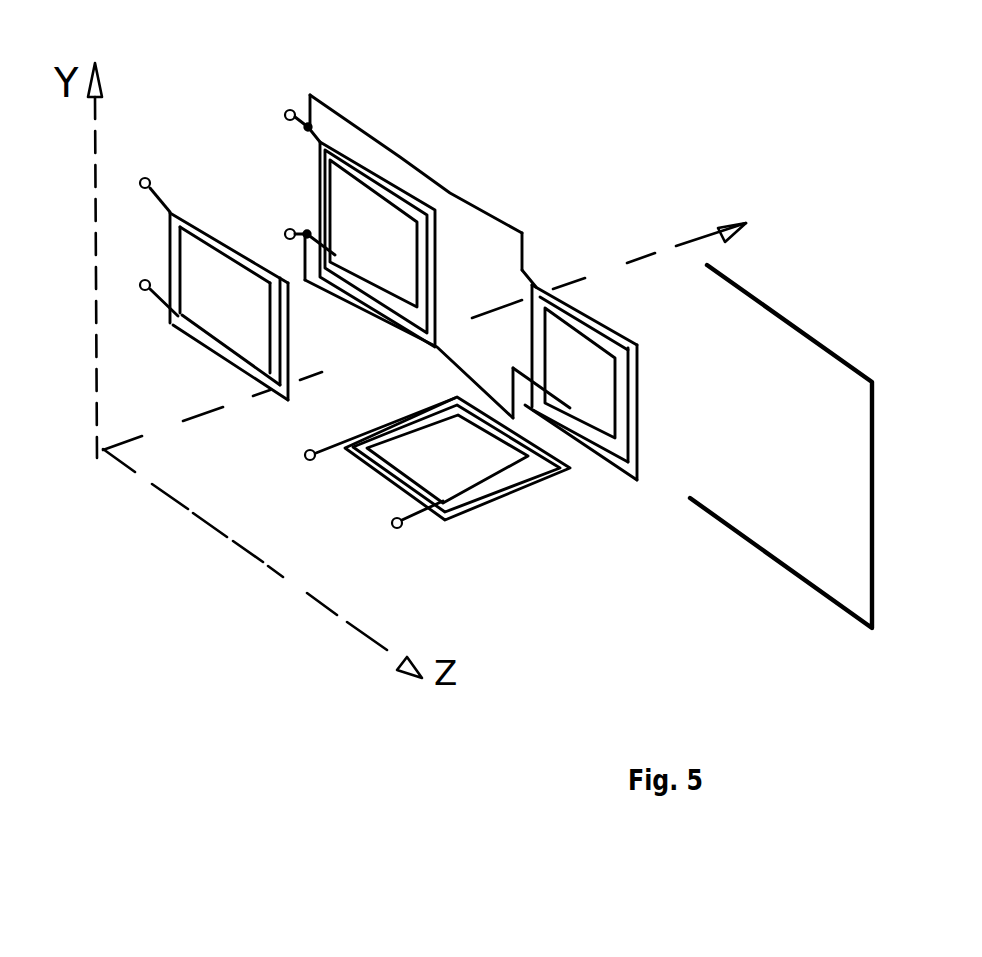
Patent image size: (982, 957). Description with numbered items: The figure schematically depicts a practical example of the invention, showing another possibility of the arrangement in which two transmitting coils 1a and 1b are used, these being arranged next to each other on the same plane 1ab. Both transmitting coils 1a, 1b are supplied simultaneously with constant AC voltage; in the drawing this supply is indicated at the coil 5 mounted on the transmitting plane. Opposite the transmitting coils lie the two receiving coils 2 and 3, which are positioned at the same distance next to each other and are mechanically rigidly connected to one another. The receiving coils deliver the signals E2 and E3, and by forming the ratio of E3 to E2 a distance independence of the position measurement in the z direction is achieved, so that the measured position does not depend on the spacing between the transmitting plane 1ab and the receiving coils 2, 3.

The transmitting coil 1a is at (395, 167).
The transmitting coil 1b is at (650, 391).
The plane 1ab is at (781, 446).
The receiving coil 2 is at (224, 227).
The receiving coil 3 is at (510, 503).
The first coil 5 is at (295, 140).
The receiving coil signal E2 is at (142, 203).
The receiving coil signal E3 is at (368, 518).